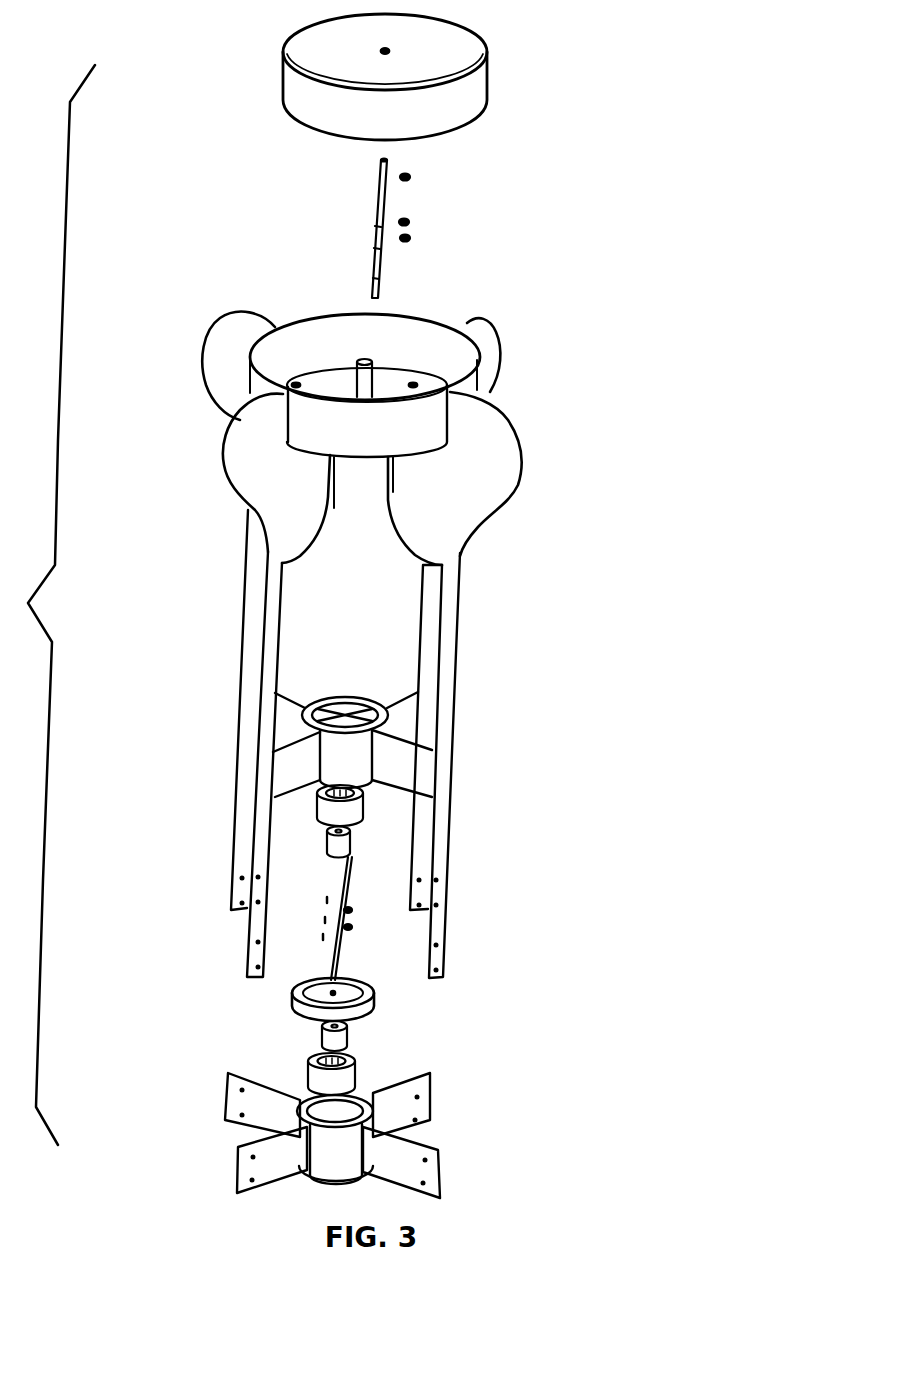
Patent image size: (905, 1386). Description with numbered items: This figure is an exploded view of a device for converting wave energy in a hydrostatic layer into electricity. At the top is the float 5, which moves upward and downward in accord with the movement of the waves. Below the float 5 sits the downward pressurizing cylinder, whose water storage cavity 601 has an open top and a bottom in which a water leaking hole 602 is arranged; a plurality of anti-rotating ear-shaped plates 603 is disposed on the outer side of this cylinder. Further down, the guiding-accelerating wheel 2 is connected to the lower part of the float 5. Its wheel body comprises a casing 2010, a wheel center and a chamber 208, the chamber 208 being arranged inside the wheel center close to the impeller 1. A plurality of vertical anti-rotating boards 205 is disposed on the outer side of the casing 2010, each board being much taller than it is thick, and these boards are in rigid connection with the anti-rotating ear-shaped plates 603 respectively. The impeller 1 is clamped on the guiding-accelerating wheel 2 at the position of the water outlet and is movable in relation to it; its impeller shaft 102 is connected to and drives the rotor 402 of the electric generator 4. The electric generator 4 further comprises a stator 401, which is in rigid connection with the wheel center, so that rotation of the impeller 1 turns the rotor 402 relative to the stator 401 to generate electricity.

The float 5 is at (448, 108).
The water storage cavity 601 is at (320, 345).
The water leaking hole 602 is at (423, 382).
The anti-rotating ear-shaped plate 603 is at (478, 453).
The impeller shaft 102 is at (295, 857).
The impeller 1 is at (337, 1010).
The electric generator 4 is at (216, 992).
The rotor 402 is at (298, 1033).
The stator 401 is at (325, 1078).
The guiding-accelerating wheel 2 is at (320, 1042).
The chamber 208 is at (400, 1103).
The vertical anti-rotating board 205 is at (337, 1112).
The casing 2010 is at (337, 1150).